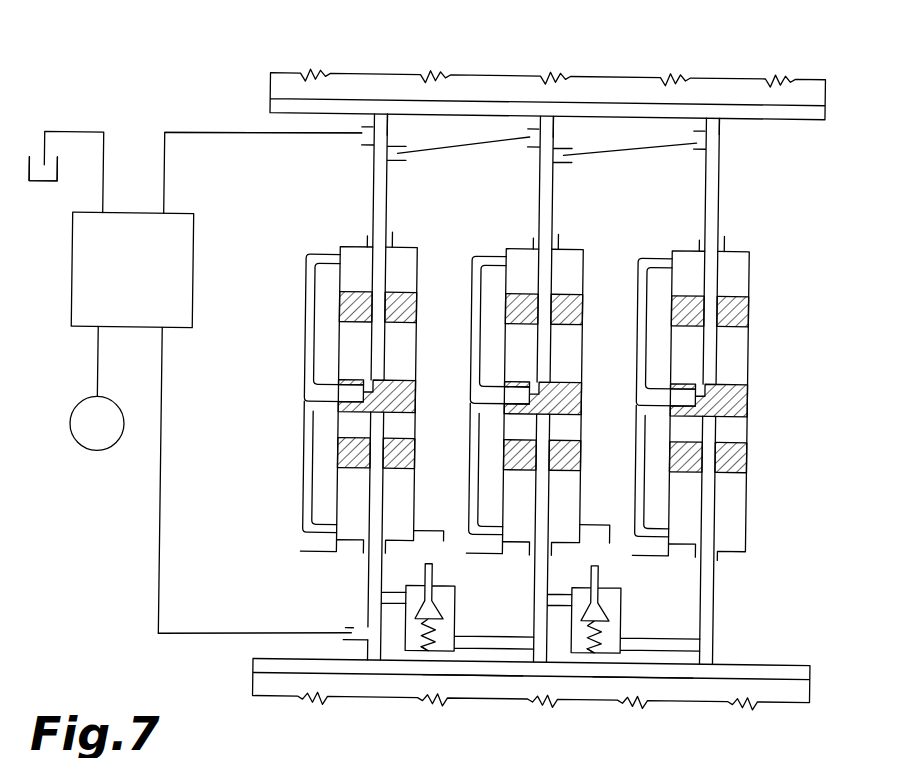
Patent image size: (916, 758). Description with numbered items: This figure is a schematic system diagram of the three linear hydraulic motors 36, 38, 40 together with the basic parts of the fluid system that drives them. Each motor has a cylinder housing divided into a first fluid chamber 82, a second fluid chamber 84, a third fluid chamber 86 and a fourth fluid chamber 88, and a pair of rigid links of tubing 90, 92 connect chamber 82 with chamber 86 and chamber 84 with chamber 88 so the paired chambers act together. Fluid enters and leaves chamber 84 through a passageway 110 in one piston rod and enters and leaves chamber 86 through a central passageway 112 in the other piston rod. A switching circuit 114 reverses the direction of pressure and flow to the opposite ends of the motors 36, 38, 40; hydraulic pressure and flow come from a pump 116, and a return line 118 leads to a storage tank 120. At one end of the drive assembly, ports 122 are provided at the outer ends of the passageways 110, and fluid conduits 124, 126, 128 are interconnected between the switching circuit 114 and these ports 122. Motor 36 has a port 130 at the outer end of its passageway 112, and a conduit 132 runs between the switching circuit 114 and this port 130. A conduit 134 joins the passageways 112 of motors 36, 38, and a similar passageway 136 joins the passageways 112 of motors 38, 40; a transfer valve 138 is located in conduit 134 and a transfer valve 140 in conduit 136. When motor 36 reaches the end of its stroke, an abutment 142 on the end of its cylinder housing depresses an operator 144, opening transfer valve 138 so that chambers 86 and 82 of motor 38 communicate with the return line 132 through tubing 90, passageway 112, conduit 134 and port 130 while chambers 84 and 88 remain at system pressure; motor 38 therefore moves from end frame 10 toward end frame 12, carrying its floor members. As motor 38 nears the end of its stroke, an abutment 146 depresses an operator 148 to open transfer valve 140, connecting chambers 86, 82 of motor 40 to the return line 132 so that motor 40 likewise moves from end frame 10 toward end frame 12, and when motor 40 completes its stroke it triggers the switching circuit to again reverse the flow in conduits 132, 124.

The end frame 10 is at (812, 88).
The end frame 12 is at (752, 690).
The linear hydraulic motor 36 is at (332, 241).
The linear hydraulic motor 38 is at (578, 237).
The linear hydraulic motor 40 is at (757, 235).
The first fluid chamber 82 is at (408, 262).
The second fluid chamber 84 is at (402, 352).
The third fluid chamber 86 is at (410, 414).
The fourth fluid chamber 88 is at (352, 528).
The link of tubing 90 is at (307, 326).
The link of tubing 92 is at (307, 466).
The passageway 110 is at (374, 205).
The central passageway 112 is at (367, 570).
The switching circuit 114 is at (140, 203).
The pump 116 is at (93, 453).
The return line 118 is at (104, 134).
The storage tank 120 is at (44, 190).
The port 122 is at (388, 135).
The fluid conduit 124 is at (232, 138).
The fluid conduit 126 is at (463, 151).
The fluid conduit 128 is at (643, 146).
The port 130 is at (350, 634).
The conduit 132 is at (167, 546).
The conduit 134 is at (483, 674).
The passageway 136 is at (651, 674).
The transfer valve 138 is at (420, 655).
The transfer valve 140 is at (600, 652).
The abutment 142 is at (431, 540).
The operator 144 is at (440, 566).
The abutment 146 is at (582, 545).
The operator 148 is at (605, 577).